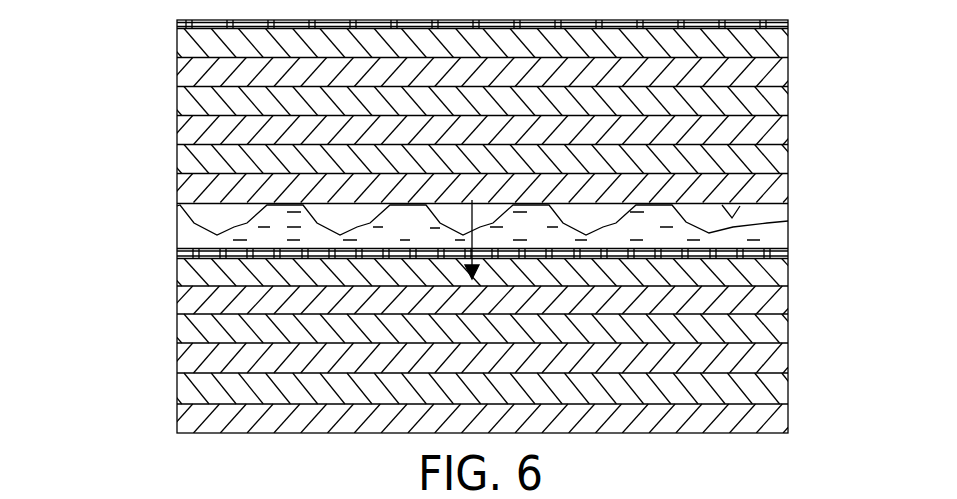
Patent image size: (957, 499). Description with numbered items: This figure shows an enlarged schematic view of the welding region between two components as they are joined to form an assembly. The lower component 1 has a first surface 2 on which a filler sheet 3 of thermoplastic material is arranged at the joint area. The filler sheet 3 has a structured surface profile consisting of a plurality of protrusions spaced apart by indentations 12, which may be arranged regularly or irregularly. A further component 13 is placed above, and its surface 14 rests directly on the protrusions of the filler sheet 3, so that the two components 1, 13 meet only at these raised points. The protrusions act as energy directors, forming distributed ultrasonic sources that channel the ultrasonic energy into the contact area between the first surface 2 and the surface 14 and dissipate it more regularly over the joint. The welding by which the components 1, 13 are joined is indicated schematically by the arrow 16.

The component 1 is at (770, 358).
The first surface 2 is at (767, 248).
The filler sheet 3 is at (767, 222).
The indentations 12 is at (262, 207).
The further component 13 is at (770, 100).
The surface 14 is at (745, 214).
The arrow 16 is at (432, 239).